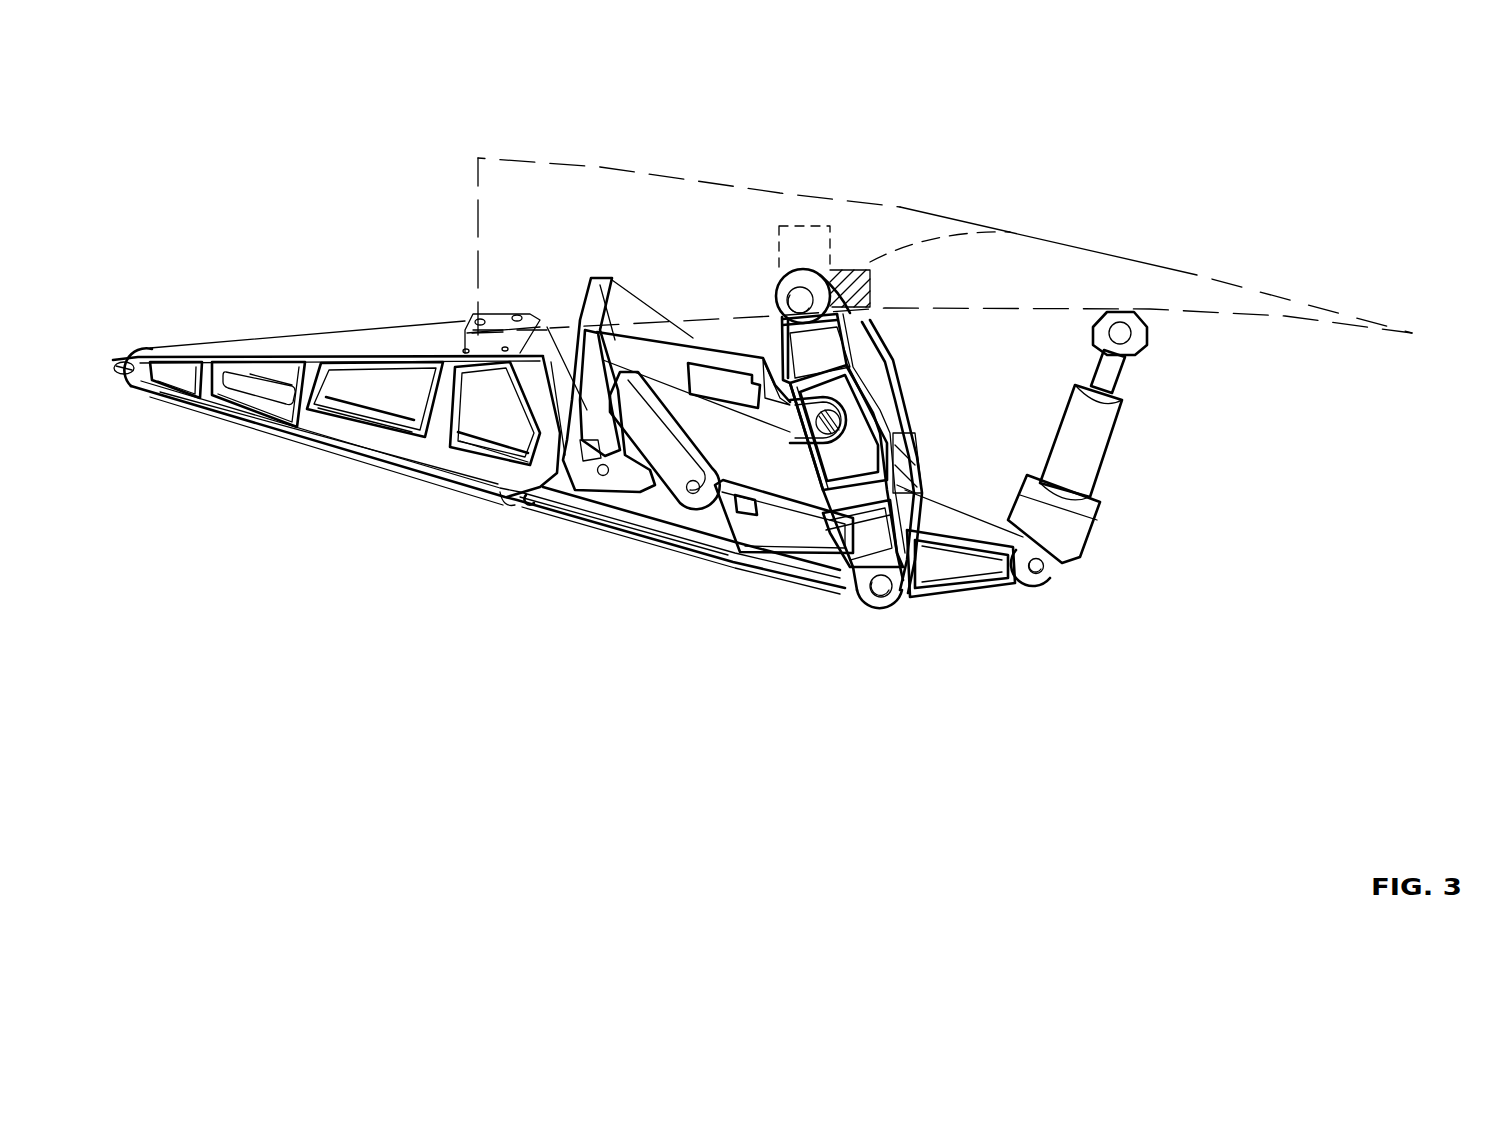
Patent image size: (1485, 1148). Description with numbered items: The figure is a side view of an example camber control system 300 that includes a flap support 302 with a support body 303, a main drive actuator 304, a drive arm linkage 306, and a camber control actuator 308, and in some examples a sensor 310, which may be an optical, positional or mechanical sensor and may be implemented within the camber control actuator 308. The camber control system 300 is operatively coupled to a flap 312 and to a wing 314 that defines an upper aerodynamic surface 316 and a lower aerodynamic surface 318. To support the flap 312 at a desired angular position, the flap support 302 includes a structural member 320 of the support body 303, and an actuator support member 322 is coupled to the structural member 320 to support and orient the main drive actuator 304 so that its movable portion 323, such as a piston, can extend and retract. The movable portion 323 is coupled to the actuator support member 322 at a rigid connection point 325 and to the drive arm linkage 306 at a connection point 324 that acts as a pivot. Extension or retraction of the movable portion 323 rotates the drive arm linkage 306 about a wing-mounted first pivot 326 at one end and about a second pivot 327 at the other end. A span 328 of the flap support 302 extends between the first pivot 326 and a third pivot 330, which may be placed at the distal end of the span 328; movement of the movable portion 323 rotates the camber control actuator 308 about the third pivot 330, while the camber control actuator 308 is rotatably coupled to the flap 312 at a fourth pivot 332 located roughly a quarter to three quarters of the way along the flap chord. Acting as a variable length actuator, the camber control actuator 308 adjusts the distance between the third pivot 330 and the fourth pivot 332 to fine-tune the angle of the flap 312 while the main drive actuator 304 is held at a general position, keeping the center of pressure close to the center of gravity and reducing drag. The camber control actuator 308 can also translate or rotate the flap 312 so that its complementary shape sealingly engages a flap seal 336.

The camber control system 300 is at (1140, 373).
The flap support 302 is at (142, 333).
The support body 303 is at (352, 466).
The main drive actuator 304 is at (660, 332).
The drive arm linkage 306 is at (900, 350).
The camber control actuator 308 is at (1100, 480).
The sensor 310 is at (812, 226).
The flap 312 is at (1227, 282).
The wing 314 is at (507, 138).
The upper aerodynamic surface 316 is at (595, 162).
The lower aerodynamic surface 318 is at (542, 330).
The structural member 320 is at (503, 508).
The actuator support member 322 is at (606, 480).
The movable portion 323 is at (761, 404).
The connection point 324 is at (838, 413).
The rigid connection point 325 is at (662, 468).
The first pivot 326 is at (878, 596).
The second pivot 327 is at (787, 270).
The span 328 is at (972, 598).
The third pivot 330 is at (1047, 590).
The fourth pivot 332 is at (1121, 333).
The flap seal 336 is at (856, 270).